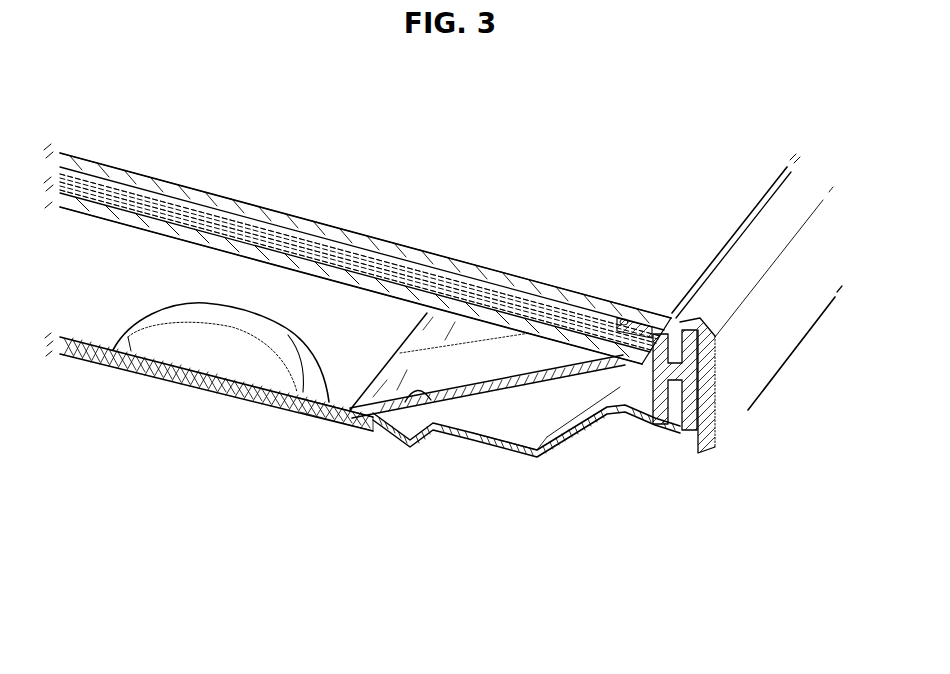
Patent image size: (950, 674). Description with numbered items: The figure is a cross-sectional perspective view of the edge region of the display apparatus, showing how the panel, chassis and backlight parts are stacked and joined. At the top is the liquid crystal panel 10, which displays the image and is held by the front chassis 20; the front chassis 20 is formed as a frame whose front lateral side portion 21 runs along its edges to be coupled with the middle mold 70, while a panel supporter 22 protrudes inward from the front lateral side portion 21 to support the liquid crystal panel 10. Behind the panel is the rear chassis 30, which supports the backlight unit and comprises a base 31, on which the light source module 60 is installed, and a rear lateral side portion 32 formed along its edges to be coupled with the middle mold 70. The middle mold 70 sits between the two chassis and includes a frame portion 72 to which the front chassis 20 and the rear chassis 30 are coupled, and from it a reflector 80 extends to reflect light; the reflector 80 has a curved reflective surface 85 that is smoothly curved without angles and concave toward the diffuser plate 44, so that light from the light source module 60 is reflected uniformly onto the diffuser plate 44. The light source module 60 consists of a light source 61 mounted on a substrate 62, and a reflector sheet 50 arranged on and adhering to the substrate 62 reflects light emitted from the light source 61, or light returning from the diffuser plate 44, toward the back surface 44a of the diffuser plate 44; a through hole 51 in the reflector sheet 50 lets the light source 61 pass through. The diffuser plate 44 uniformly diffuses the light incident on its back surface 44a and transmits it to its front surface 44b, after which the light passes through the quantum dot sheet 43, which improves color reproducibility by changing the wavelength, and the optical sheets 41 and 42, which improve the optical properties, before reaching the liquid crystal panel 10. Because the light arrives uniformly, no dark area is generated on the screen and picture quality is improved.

The liquid crystal panel 10 is at (272, 215).
The front chassis 20 is at (766, 312).
The front lateral side portion 21 is at (713, 385).
The panel supporter 22 is at (650, 313).
The rear chassis 30 is at (515, 473).
The base 31 is at (357, 418).
The rear lateral side portion 32 is at (655, 432).
The optical sheet 41 is at (453, 284).
The optical sheet 42 is at (485, 313).
The quantum dot sheet 43 is at (540, 318).
The diffuser plate 44 is at (357, 290).
The back surface of the diffuser plate 44a is at (110, 209).
The front surface of the diffuser plate 44b is at (110, 192).
The reflector sheet 50 is at (93, 328).
The through hole 51 is at (311, 378).
The light source module 60 is at (221, 403).
The light source 61 is at (200, 357).
The substrate 62 is at (283, 398).
The middle mold 70 is at (672, 393).
The frame portion 72 is at (615, 408).
The reflector 80 is at (488, 400).
The curved reflective surface 85 is at (407, 392).